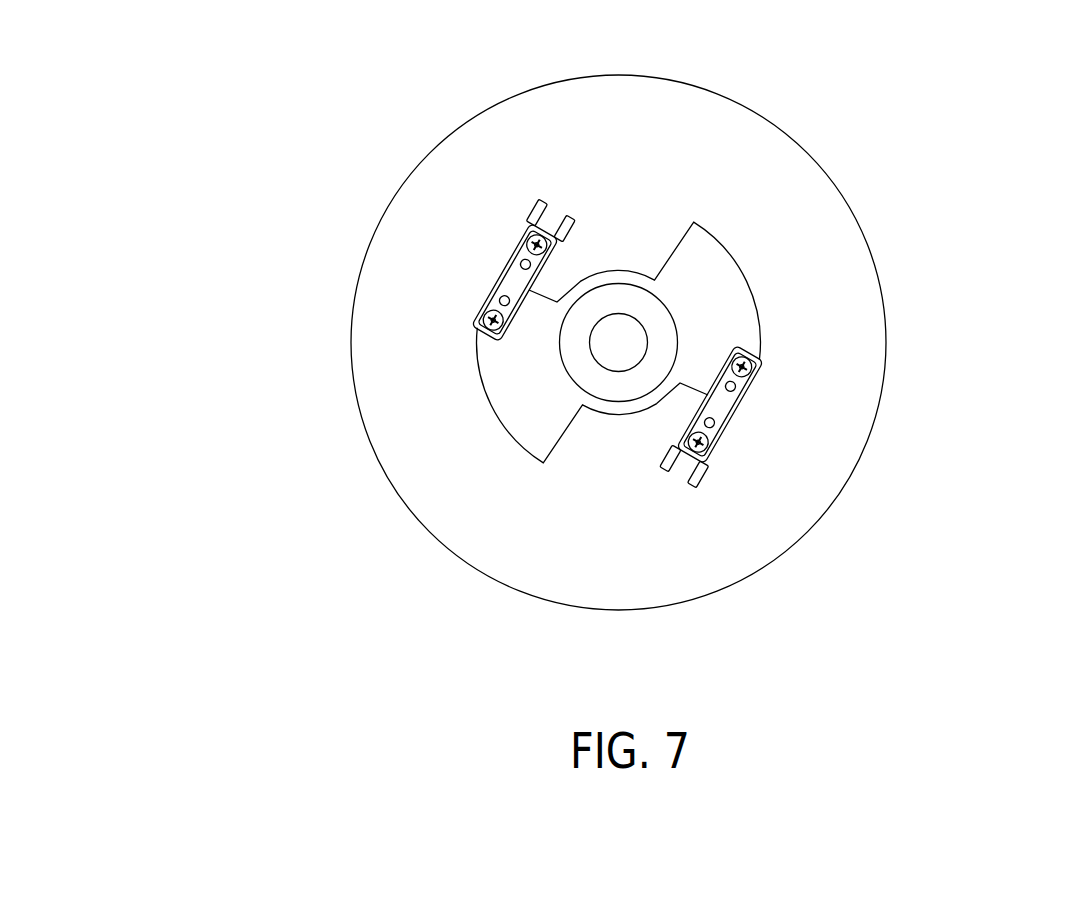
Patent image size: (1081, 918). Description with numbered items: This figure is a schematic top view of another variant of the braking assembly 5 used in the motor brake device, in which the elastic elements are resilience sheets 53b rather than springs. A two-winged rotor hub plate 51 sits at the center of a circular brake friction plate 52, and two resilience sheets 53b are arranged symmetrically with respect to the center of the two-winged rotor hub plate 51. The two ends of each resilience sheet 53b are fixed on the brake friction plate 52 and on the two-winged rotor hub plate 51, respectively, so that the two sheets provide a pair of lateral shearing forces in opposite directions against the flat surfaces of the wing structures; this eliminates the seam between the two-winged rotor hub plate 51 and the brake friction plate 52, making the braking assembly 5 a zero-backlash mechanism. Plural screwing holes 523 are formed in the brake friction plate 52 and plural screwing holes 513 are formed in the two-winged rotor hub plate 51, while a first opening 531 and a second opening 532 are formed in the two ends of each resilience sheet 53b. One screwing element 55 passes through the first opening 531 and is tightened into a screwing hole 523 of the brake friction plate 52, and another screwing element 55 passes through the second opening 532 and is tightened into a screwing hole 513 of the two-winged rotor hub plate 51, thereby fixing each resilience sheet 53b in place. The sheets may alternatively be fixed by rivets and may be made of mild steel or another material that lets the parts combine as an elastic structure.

The braking assembly 5 is at (1058, 96).
The two-winged rotor hub plate 51 is at (622, 408).
The brake friction plate 52 is at (820, 264).
The resilience sheet 53b is at (507, 280).
The screwing element 55 is at (533, 237).
The screwing hole 513 is at (508, 308).
The screwing hole 523 is at (532, 265).
The first opening 531 is at (502, 272).
The second opening 532 is at (499, 303).